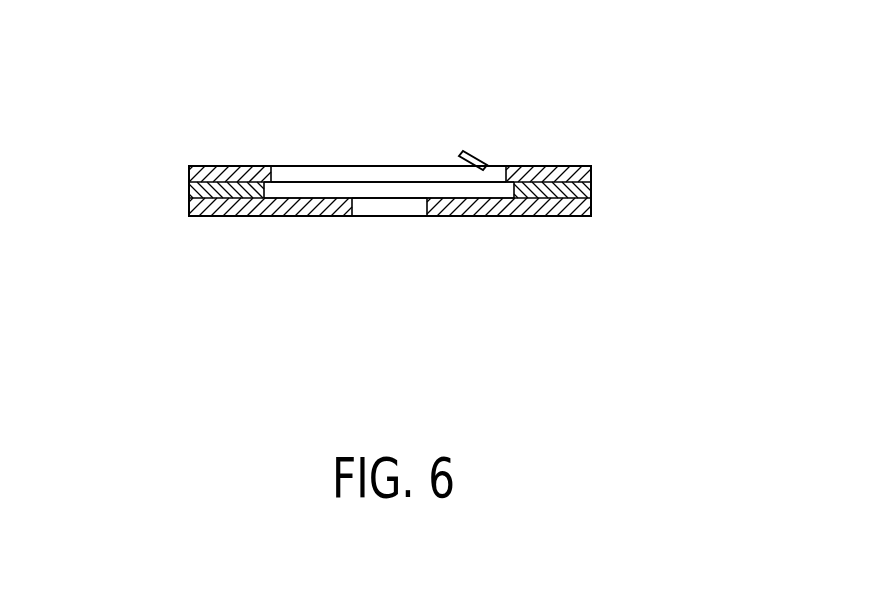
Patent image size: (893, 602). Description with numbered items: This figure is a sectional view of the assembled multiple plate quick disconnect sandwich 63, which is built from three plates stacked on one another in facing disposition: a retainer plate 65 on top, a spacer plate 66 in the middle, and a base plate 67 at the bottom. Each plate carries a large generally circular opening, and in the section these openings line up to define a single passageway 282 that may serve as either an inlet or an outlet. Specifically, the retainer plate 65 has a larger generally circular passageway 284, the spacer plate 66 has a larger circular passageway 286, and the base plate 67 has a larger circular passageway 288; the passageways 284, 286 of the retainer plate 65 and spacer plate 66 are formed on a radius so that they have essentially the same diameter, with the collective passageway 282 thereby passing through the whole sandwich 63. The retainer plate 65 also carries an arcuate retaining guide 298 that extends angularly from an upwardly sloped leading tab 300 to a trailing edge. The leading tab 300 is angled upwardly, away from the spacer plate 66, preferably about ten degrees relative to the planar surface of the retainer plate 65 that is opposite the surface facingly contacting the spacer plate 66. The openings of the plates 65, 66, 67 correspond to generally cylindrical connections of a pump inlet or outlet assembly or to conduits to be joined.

The multiple plate quick disconnect sandwich 63 is at (606, 179).
The retainer plate 65 is at (336, 135).
The spacer plate 66 is at (198, 188).
The base plate 67 is at (193, 207).
The inlet or outlet passageway 282 is at (351, 145).
The larger generally circular passageway of retainer plate 284 is at (380, 178).
The larger circular passageway of spacer plate 286 is at (405, 188).
The larger circular passageway of base plate 288 is at (380, 205).
The retaining guide 298 is at (252, 170).
The leading tab 300 is at (473, 154).